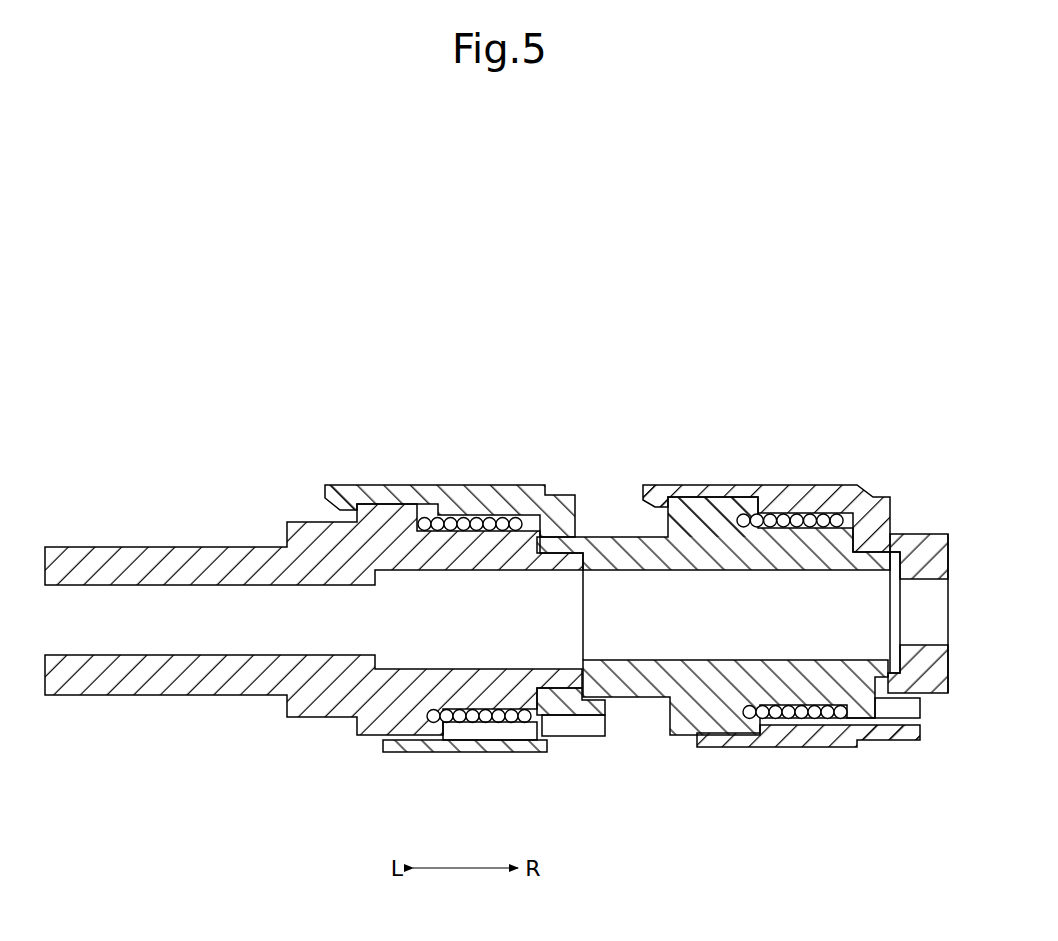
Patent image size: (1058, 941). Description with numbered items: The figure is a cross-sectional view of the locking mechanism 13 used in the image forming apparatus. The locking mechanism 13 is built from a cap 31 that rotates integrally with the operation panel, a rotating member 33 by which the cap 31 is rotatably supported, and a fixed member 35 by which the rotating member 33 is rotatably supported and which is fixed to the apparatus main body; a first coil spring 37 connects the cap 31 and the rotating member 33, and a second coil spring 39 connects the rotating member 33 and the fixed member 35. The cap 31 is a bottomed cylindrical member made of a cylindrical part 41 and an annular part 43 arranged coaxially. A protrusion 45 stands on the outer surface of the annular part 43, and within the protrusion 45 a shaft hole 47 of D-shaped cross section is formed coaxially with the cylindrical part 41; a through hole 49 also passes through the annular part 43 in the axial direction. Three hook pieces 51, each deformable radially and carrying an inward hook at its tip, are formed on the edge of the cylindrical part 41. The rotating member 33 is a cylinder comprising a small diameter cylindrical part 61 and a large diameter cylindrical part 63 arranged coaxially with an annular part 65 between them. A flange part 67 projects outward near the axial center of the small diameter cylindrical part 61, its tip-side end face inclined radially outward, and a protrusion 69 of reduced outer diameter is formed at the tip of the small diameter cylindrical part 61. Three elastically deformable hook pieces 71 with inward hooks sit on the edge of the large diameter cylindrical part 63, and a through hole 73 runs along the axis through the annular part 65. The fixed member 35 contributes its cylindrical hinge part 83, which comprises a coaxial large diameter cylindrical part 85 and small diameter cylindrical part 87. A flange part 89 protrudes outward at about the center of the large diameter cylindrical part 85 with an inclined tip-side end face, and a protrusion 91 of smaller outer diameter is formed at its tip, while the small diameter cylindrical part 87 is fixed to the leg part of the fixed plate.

The locking mechanism 13 is at (500, 410).
The cap 31 is at (848, 483).
The rotating member 33 is at (611, 535).
The fixed member 35 is at (200, 545).
The first coil spring 37 is at (776, 500).
The second coil spring 39 is at (472, 500).
The cylindrical part 41 is at (768, 750).
The annular part 43 is at (875, 742).
The protrusion 45 is at (947, 660).
The shaft hole 47 is at (962, 640).
The through hole 49 is at (868, 722).
The hook pieces 51 is at (667, 485).
The small diameter cylindrical part 61 is at (755, 680).
The large diameter cylindrical part 63 is at (470, 752).
The annular part 65 is at (562, 740).
The flange part 67 is at (708, 513).
The protrusion 69 is at (850, 725).
The hook pieces 71 is at (338, 500).
The through hole 73 is at (540, 742).
The hinge part 83 is at (166, 566).
The large diameter cylindrical part 85 is at (440, 688).
The small diameter cylindrical part 87 is at (175, 680).
The flange part 89 is at (392, 503).
The protrusion 91 is at (590, 738).